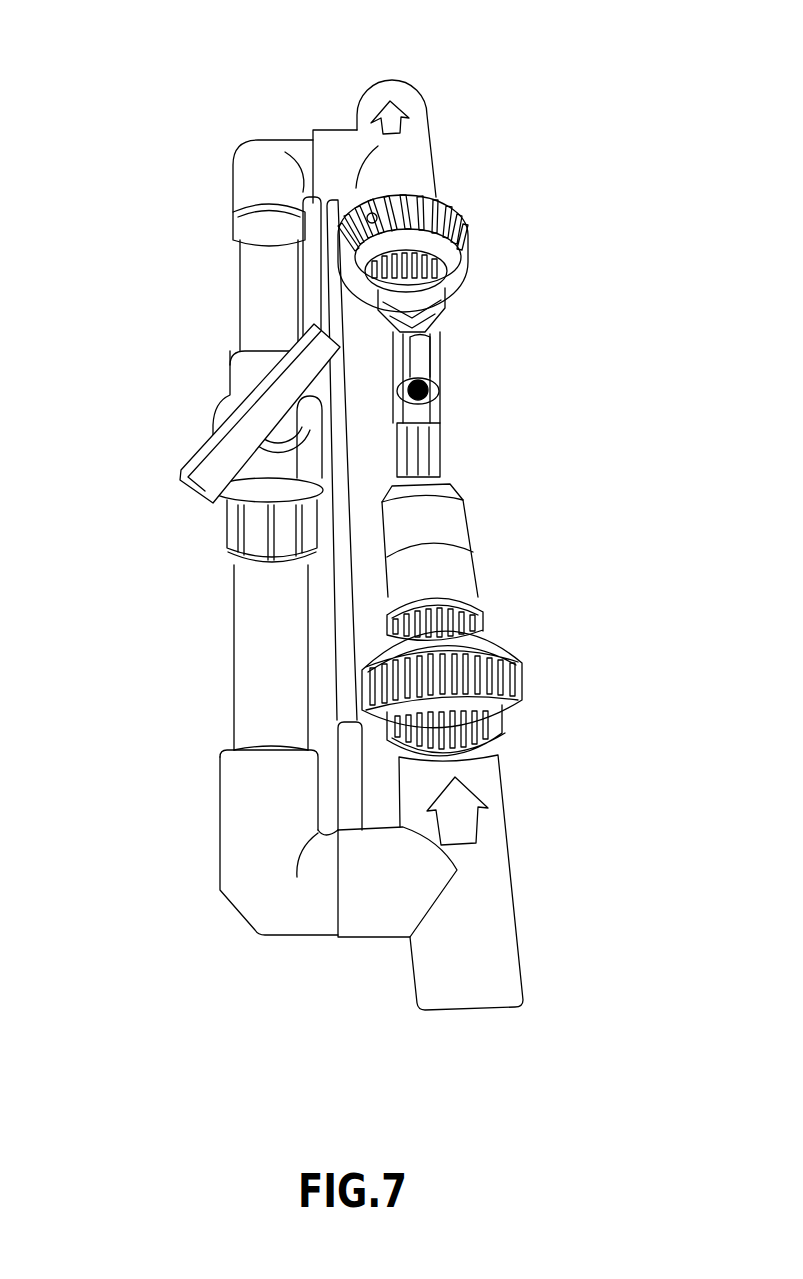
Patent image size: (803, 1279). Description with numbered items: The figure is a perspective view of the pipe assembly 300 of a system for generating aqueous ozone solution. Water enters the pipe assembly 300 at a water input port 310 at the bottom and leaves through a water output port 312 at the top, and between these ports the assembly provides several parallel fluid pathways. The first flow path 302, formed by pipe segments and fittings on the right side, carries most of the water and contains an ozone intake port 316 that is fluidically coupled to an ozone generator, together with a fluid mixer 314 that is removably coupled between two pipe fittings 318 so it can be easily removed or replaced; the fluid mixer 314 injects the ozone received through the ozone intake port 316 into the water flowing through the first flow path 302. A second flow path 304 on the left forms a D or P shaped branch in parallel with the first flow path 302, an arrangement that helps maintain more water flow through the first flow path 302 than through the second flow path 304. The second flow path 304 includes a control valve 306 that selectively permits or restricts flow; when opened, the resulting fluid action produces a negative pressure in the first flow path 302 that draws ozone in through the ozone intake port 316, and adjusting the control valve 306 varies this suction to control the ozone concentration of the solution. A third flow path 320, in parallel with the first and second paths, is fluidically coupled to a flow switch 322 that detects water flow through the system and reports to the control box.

The pipe assembly 300 is at (169, 63).
The first flow path 302 is at (607, 710).
The second flow path 304 is at (151, 233).
The control valve 306 is at (214, 449).
The water input port 310 is at (477, 1012).
The water output port 312 is at (390, 80).
The fluid mixer 314 is at (423, 447).
The ozone intake port 316 is at (430, 357).
The pipe fittings 318 is at (463, 233).
The third flow path 320 is at (335, 307).
The flow switch 322 is at (352, 810).